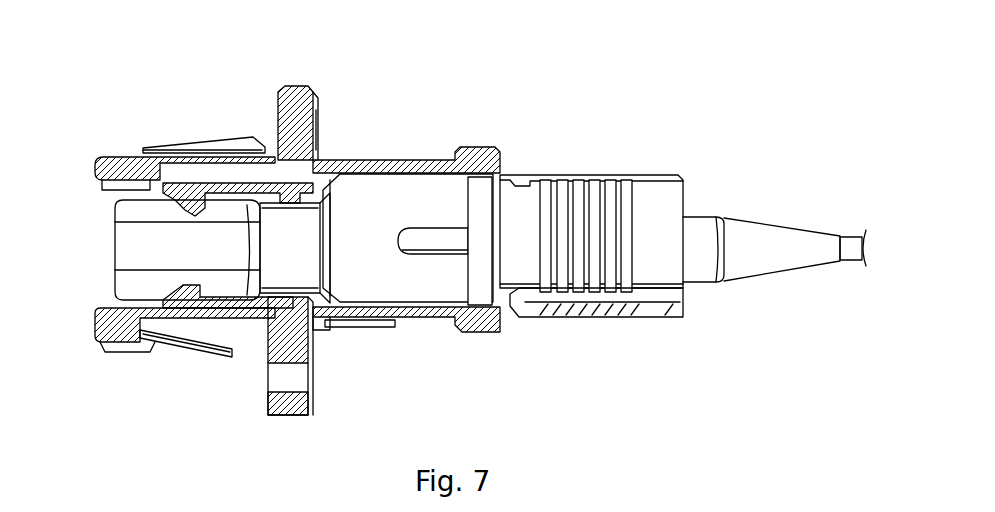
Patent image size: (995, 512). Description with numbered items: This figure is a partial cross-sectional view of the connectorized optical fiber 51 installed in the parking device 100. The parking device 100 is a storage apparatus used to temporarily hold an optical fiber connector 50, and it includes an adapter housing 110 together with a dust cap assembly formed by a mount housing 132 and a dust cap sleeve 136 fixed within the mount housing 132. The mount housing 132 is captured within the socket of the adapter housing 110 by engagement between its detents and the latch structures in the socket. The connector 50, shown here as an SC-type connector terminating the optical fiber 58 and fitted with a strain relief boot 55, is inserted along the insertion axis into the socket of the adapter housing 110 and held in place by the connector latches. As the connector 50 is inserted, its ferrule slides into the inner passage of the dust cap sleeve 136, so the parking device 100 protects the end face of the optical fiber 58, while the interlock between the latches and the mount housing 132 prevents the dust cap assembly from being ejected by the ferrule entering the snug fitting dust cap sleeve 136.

The parking device 100 is at (178, 100).
The mount housing 132 is at (130, 262).
The dust cap sleeve 136 is at (300, 262).
The adapter housing 110 is at (385, 337).
The optical fiber connector 50 is at (450, 126).
The connectorized optical fiber 51 is at (598, 108).
The strain relief boot 55 is at (752, 268).
The optical fiber 58 is at (853, 250).